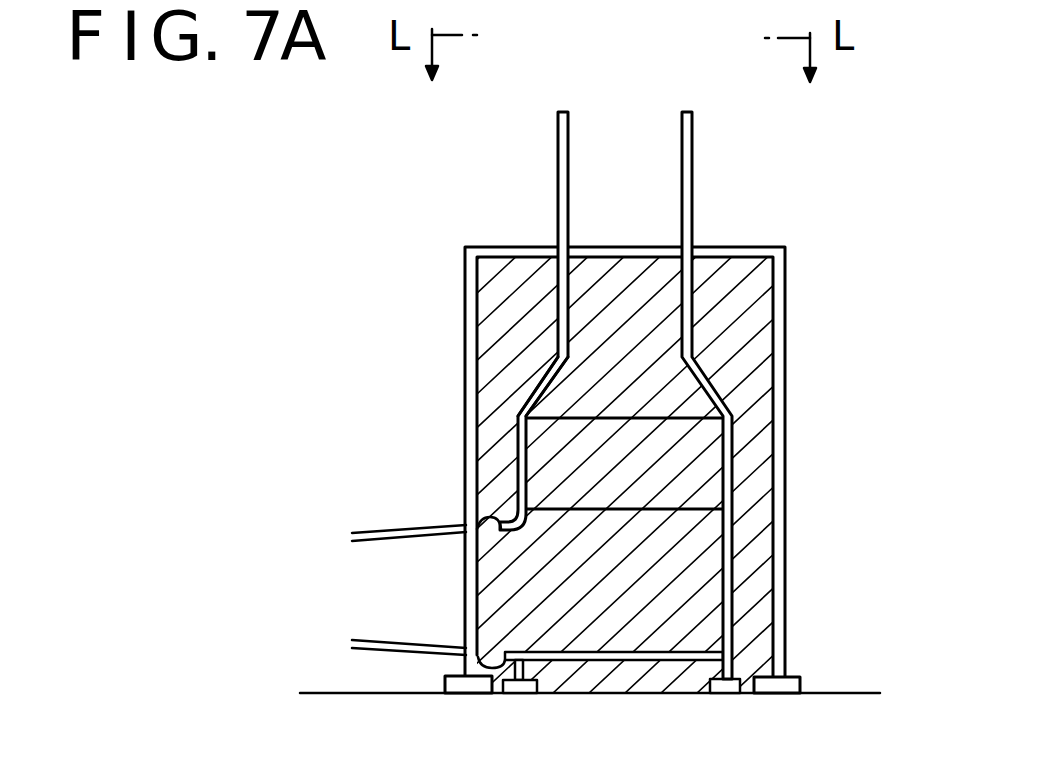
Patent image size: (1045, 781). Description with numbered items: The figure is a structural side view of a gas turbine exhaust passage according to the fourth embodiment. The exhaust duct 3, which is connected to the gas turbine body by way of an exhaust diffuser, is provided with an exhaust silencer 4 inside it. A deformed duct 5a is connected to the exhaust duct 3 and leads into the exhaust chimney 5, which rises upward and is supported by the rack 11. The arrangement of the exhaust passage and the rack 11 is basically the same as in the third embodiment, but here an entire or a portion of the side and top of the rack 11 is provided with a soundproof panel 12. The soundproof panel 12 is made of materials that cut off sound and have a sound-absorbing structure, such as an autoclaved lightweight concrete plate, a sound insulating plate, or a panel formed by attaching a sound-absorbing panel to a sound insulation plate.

The exhaust duct 3 is at (431, 430).
The exhaust silencer 4 is at (705, 468).
The exhaust chimney 5 is at (550, 112).
The deformed duct 5a is at (455, 358).
The rack 11 is at (783, 317).
The soundproof panel 12 is at (583, 622).